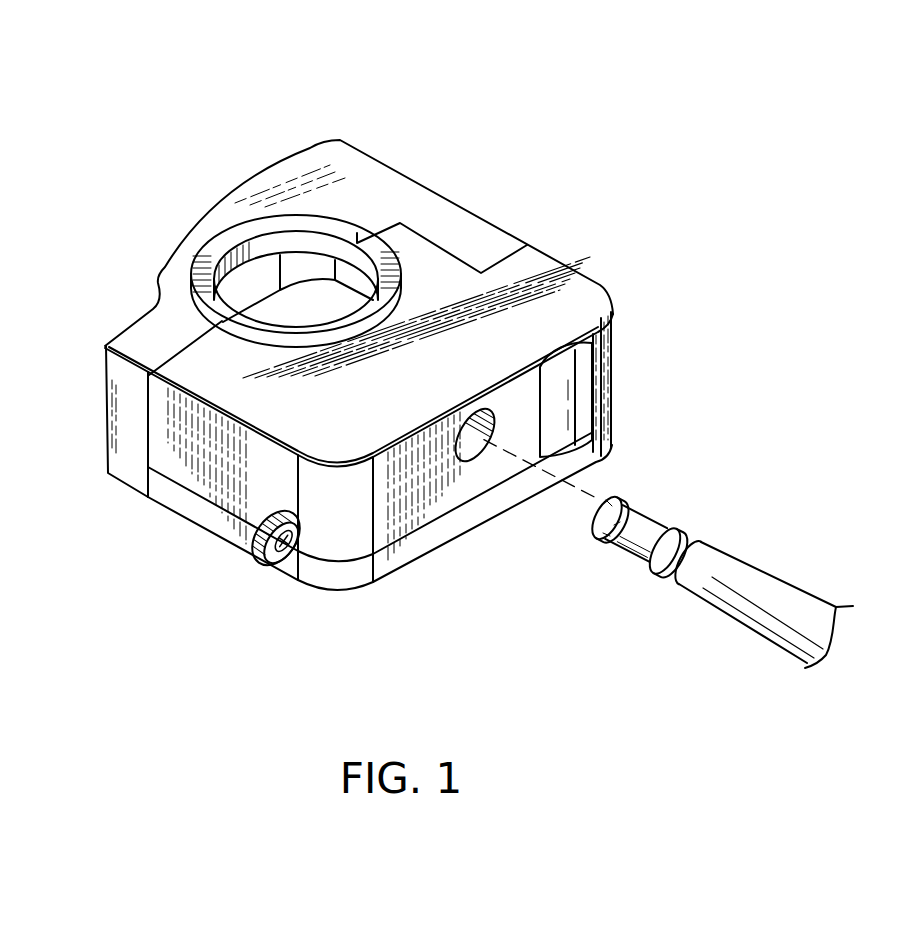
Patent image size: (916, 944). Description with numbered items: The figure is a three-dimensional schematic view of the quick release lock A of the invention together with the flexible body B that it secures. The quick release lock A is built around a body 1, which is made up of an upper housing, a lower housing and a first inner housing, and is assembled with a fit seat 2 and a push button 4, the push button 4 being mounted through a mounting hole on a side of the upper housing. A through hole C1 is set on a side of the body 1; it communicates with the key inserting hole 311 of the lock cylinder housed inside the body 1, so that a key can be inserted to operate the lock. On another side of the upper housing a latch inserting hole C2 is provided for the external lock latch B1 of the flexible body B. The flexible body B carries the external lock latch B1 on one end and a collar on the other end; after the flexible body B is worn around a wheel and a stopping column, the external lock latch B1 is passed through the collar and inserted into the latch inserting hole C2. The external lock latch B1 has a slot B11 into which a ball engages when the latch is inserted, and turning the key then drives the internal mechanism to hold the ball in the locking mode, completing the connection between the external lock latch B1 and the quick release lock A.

The quick release lock A is at (476, 188).
The body 1 is at (549, 272).
The fit seat 2 is at (337, 166).
The push button 4 is at (580, 387).
The key inserting hole 311 is at (250, 540).
The through hole C1 is at (278, 556).
The latch inserting hole C2 is at (477, 442).
The flexible body B is at (750, 553).
The external lock latch B1 is at (657, 521).
The slot B11 is at (633, 497).